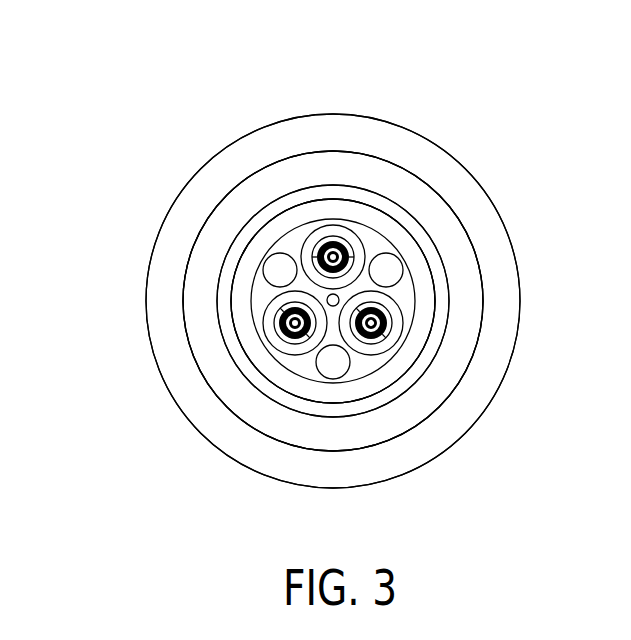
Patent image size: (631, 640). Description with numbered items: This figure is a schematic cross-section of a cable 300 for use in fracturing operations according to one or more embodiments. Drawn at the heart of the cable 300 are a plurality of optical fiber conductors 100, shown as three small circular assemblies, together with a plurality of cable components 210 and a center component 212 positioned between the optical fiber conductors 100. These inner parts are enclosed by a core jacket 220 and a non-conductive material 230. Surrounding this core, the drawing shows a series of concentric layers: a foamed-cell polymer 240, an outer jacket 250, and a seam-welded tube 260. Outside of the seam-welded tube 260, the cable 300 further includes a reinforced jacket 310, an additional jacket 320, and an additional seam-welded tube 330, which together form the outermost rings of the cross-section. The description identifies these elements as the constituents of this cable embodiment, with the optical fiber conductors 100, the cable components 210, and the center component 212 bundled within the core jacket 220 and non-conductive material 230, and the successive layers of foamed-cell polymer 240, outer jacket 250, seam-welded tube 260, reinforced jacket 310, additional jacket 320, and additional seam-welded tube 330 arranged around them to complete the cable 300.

The cable 300 is at (108, 42).
The optical fiber conductor 100 is at (310, 248).
The cable component 210 is at (273, 265).
The center component 212 is at (322, 348).
The core jacket 220 is at (268, 348).
The non-conductive material 230 is at (263, 313).
The foamed-cell polymer 240 is at (370, 388).
The outer jacket 250 is at (330, 405).
The seam-welded tube 260 is at (397, 390).
The reinforced jacket 310 is at (433, 367).
The additional jacket 320 is at (468, 285).
The additional seam-welded tube 330 is at (463, 228).